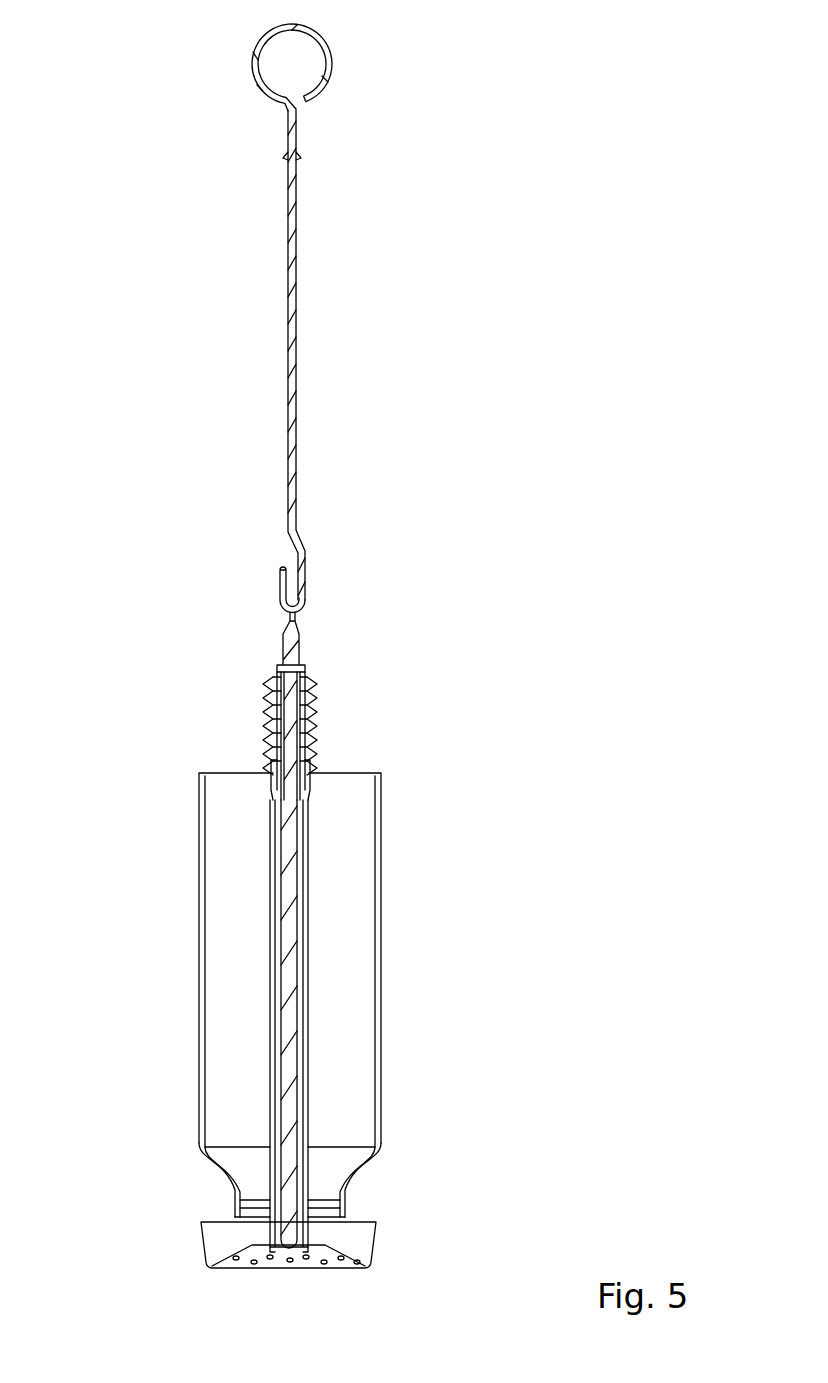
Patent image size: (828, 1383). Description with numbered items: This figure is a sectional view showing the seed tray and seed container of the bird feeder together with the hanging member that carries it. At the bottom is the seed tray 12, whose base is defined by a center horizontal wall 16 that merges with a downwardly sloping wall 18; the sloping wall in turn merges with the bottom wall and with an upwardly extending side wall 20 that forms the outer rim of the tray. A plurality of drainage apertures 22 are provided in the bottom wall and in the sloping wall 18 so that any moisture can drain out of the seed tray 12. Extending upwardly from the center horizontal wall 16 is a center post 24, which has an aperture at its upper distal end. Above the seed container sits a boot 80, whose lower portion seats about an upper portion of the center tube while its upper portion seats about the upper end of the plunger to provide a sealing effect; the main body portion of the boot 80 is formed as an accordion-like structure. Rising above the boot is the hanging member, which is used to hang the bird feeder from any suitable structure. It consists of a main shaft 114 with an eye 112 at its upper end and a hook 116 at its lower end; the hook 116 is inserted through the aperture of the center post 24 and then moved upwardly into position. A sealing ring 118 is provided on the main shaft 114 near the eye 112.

The eye 112 is at (333, 62).
The sealing ring 118 is at (302, 157).
The main shaft 114 is at (296, 412).
The hook 116 is at (280, 582).
The boot 80 is at (372, 719).
The center post 24 is at (288, 1082).
The center horizontal wall 16 is at (325, 1247).
The seed tray 12 is at (291, 1276).
The upwardly extending side wall 20 is at (200, 1246).
The drainage apertures 22 is at (268, 1258).
The downwardly sloping wall 18 is at (322, 1265).